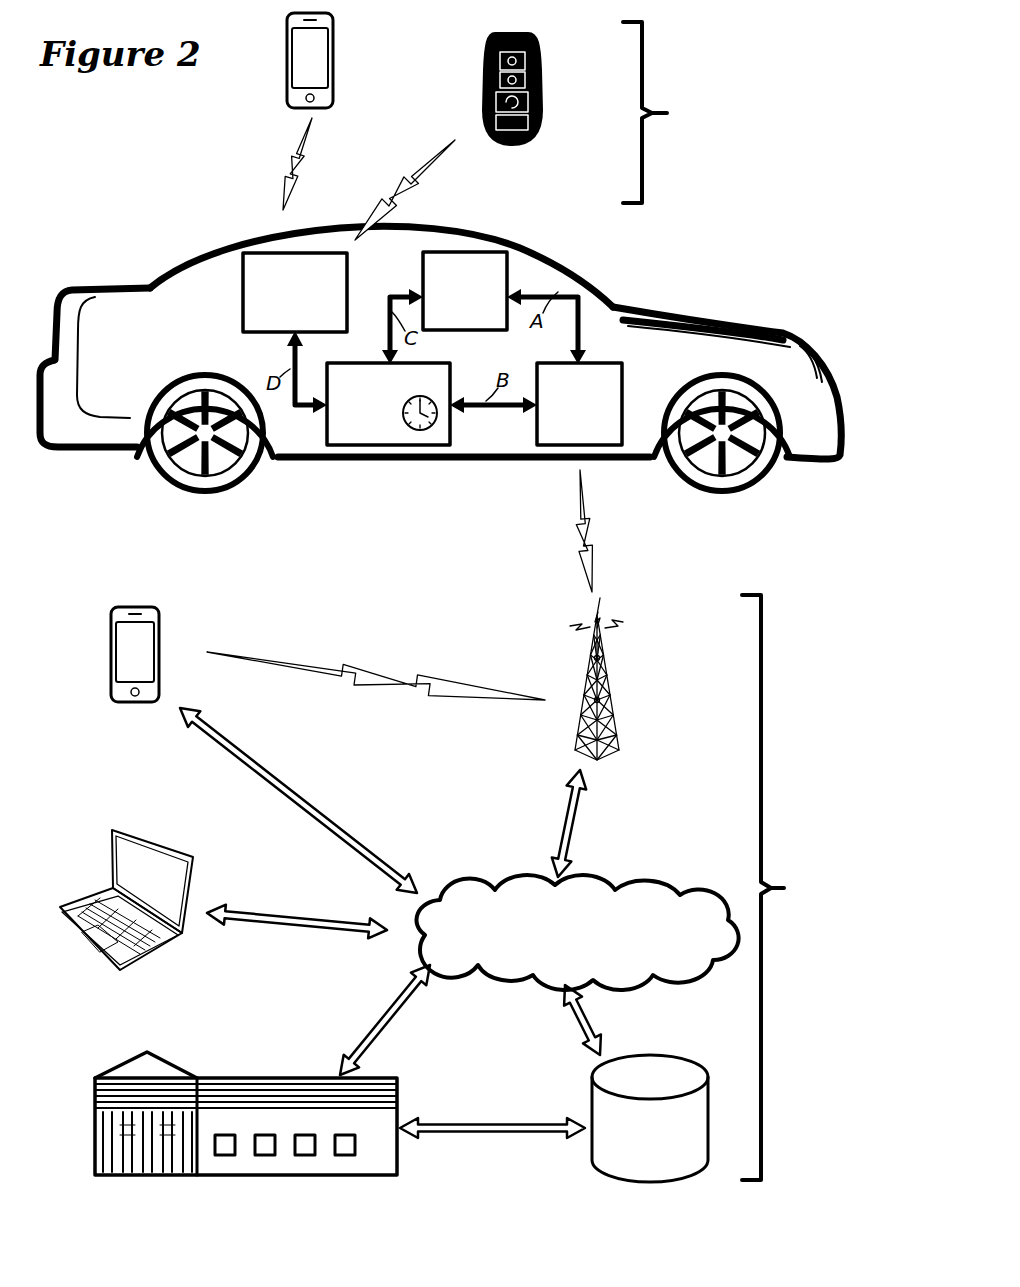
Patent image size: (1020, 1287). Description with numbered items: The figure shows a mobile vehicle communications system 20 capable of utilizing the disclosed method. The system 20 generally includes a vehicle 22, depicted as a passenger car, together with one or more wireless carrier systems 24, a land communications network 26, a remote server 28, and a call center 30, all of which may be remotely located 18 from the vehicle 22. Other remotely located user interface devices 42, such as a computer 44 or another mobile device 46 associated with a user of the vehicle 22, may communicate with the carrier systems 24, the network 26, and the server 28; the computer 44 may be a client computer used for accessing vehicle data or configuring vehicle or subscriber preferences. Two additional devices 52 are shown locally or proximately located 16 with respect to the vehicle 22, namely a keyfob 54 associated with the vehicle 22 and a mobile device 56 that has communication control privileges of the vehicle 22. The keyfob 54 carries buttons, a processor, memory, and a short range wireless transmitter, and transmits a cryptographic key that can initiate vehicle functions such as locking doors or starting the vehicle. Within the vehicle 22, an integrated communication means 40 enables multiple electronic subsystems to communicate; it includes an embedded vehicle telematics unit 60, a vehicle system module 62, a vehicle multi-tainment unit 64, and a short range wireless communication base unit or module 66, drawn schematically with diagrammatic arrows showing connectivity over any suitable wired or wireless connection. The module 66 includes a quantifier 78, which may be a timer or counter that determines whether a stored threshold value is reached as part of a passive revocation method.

The local or proximate location 16 is at (662, 112).
The remote location 18 is at (780, 887).
The mobile vehicle communications system 20 is at (797, 561).
The vehicle 22 is at (599, 287).
The wireless carrier system 24 is at (611, 688).
The land communications network 26 is at (577, 932).
The remote server 28 is at (650, 1118).
The call center 30 is at (223, 1077).
The communication means 40 is at (492, 434).
The remotely located user interface devices 42 is at (68, 761).
The computer 44 is at (92, 948).
The mobile device 46 is at (110, 688).
The additional devices 52 is at (468, 81).
The keyfob 54 is at (505, 146).
The mobile device 56 is at (286, 95).
The vehicle telematics unit 60 is at (579, 404).
The vehicle system module 62 is at (388, 404).
The vehicle multi-tainment unit 64 is at (465, 291).
The SRWC base unit 66 is at (295, 292).
The quantifier 78 is at (437, 397).